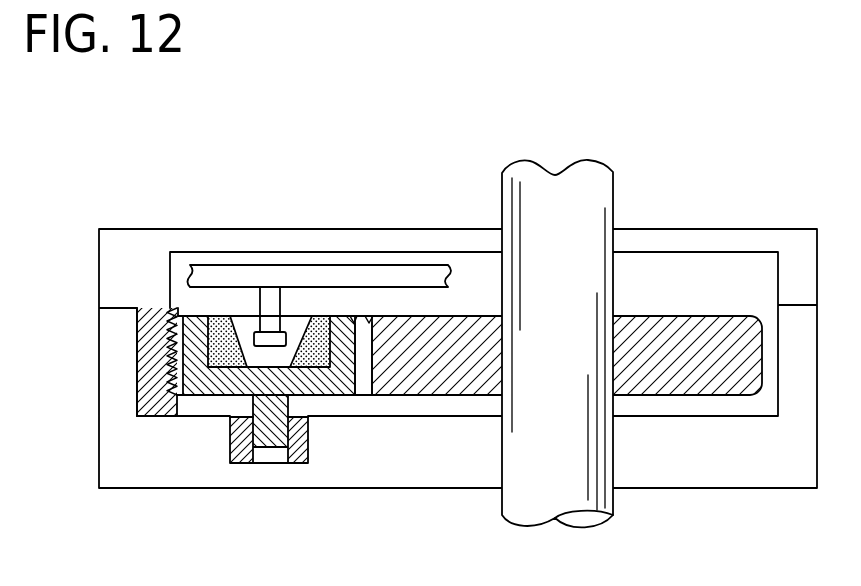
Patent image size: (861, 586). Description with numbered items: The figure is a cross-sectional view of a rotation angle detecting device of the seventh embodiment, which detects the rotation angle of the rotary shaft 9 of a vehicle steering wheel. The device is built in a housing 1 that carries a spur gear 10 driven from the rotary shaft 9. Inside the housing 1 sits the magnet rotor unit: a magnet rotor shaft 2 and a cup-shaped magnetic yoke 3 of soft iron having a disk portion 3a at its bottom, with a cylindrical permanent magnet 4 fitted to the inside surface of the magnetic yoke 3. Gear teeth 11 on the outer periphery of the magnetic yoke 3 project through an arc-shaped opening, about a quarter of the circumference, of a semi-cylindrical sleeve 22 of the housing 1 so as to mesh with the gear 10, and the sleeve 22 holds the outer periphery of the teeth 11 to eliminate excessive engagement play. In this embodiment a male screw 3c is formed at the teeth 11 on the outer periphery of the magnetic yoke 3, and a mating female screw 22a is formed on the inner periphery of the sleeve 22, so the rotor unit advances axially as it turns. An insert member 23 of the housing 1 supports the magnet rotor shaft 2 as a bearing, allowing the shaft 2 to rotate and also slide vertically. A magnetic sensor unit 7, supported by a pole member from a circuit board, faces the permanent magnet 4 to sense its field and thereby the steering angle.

The housing 1 is at (123, 461).
The magnet rotor shaft 2 is at (269, 432).
The magnetic yoke 3 is at (197, 340).
The disk portion 3a is at (326, 387).
The male screw 3c is at (180, 322).
The permanent magnet 4 is at (328, 323).
The magnetic sensor unit 7 is at (262, 338).
The rotary shaft 9 is at (597, 193).
The spur gear 10 is at (697, 370).
The gear teeth 11 is at (362, 317).
The semi-cylindrical sleeve 22 is at (153, 358).
The female screw 22a is at (172, 407).
The insert member 23 is at (243, 460).